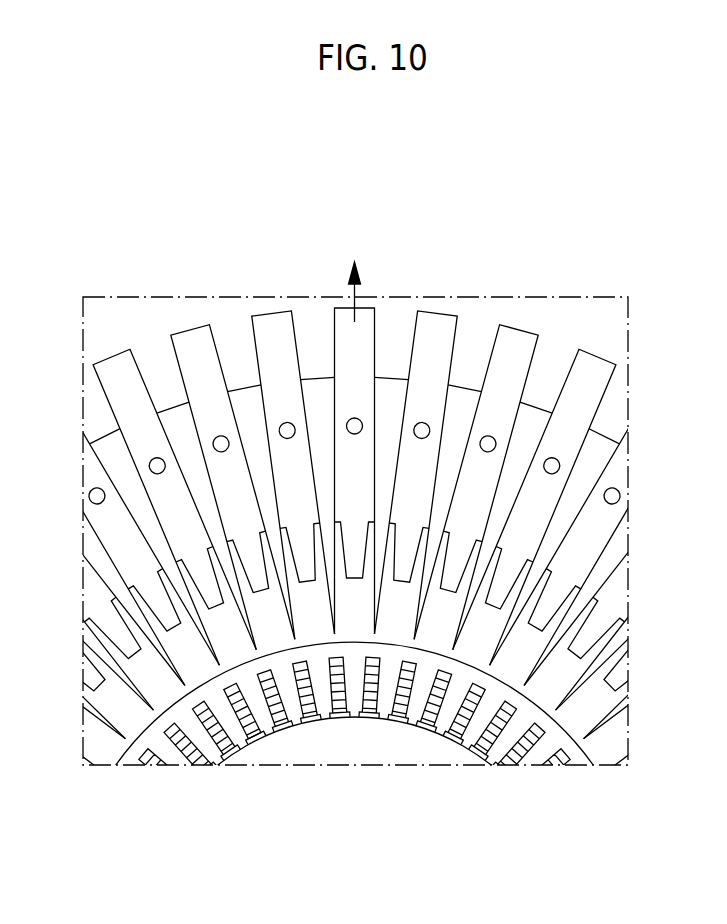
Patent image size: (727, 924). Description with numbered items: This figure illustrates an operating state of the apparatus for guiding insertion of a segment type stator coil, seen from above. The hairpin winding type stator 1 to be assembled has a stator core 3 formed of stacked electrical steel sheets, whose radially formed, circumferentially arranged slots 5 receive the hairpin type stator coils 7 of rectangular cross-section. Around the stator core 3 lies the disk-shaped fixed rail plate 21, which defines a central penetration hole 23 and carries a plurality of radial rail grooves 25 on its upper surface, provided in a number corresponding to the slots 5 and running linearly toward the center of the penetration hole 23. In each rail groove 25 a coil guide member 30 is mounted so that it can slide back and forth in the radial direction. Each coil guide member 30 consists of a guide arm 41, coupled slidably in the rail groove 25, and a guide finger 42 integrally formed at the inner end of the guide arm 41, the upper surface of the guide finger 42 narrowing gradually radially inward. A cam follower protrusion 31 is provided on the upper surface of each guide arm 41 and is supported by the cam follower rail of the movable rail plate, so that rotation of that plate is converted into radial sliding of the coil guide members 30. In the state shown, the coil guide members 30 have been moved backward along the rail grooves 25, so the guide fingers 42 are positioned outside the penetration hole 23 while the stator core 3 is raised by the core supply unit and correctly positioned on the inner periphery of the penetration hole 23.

The stator 1 is at (318, 733).
The stator core 3 is at (152, 732).
The slot 5 is at (244, 737).
The stator coil 7 is at (262, 711).
The fixed rail plate 21 is at (320, 352).
The penetration hole 23 is at (467, 663).
The rail groove 25 is at (350, 623).
The coil guide member 30 is at (383, 310).
The cam follower protrusion 31 is at (424, 428).
The guide arm 41 is at (118, 377).
The guide finger 42 is at (204, 579).